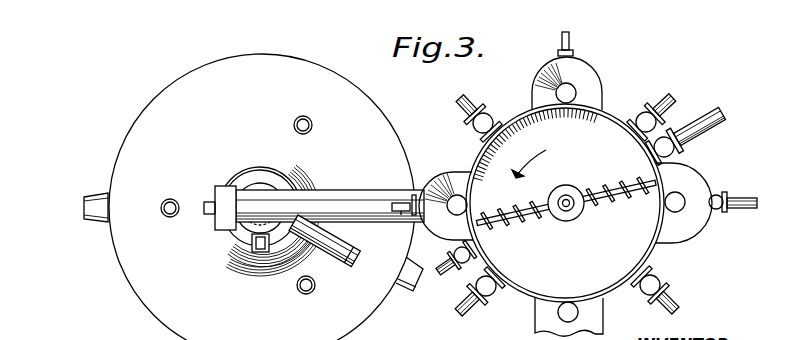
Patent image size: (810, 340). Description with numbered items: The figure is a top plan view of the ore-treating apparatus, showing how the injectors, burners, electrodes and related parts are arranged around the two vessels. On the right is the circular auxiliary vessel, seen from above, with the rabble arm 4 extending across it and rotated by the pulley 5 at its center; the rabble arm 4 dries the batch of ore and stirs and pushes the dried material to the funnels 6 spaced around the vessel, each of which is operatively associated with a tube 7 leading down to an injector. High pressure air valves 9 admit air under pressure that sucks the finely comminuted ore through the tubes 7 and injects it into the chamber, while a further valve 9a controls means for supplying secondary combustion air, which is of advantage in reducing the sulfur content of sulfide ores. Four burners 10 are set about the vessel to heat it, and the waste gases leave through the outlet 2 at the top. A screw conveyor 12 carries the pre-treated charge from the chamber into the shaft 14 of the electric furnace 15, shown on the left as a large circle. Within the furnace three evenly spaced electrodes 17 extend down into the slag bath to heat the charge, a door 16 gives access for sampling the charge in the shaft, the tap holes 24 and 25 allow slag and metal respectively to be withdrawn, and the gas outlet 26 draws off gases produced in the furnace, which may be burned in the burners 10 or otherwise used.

The outlet 2 is at (678, 122).
The rabble arm 4 is at (616, 202).
The pulley 5 is at (582, 188).
The funnels 6 is at (598, 78).
The tubes 7 is at (574, 86).
The high pressure air valves 9 is at (560, 50).
The valve 9a is at (458, 265).
The burners 10 is at (488, 112).
The screw conveyor 12 is at (350, 195).
The shaft 14 is at (297, 180).
The electric furnace 15 is at (137, 115).
The doors 16 is at (255, 255).
The electrodes 17 is at (300, 117).
The tap hole 24 is at (403, 290).
The tap hole 25 is at (88, 199).
The gas outlet 26 is at (366, 262).